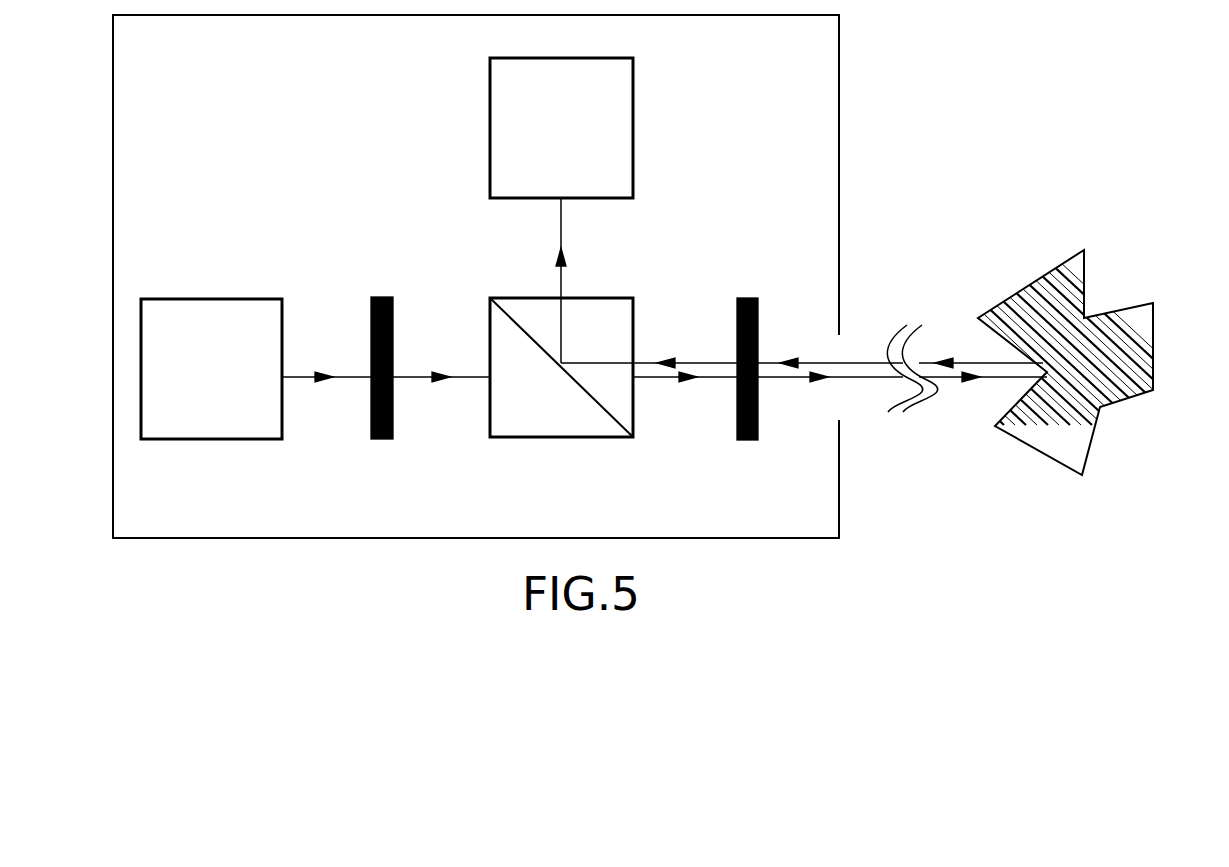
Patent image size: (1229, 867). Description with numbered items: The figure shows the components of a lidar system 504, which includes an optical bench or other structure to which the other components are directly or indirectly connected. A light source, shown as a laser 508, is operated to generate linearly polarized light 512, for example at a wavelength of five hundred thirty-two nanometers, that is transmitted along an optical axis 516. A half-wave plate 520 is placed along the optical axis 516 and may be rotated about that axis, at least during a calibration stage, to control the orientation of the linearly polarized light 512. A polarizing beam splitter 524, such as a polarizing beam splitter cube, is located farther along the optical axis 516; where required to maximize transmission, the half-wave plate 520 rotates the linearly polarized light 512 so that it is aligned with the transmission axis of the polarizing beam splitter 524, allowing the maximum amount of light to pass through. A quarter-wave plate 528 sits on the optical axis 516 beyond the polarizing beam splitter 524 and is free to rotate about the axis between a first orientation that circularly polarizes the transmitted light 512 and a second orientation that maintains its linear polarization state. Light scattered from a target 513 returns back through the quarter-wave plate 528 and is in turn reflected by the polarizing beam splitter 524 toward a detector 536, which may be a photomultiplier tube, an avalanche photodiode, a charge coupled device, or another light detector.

The lidar system 504 is at (839, 45).
The laser 508 is at (215, 298).
The linearly polarized light 512 is at (303, 375).
The target 513 is at (1030, 470).
The optical axis 516 is at (348, 380).
The half-wave plate 520 is at (383, 297).
The polarizing beam splitter 524 is at (490, 310).
The quarter-wave plate 528 is at (758, 395).
The detector 536 is at (489, 86).